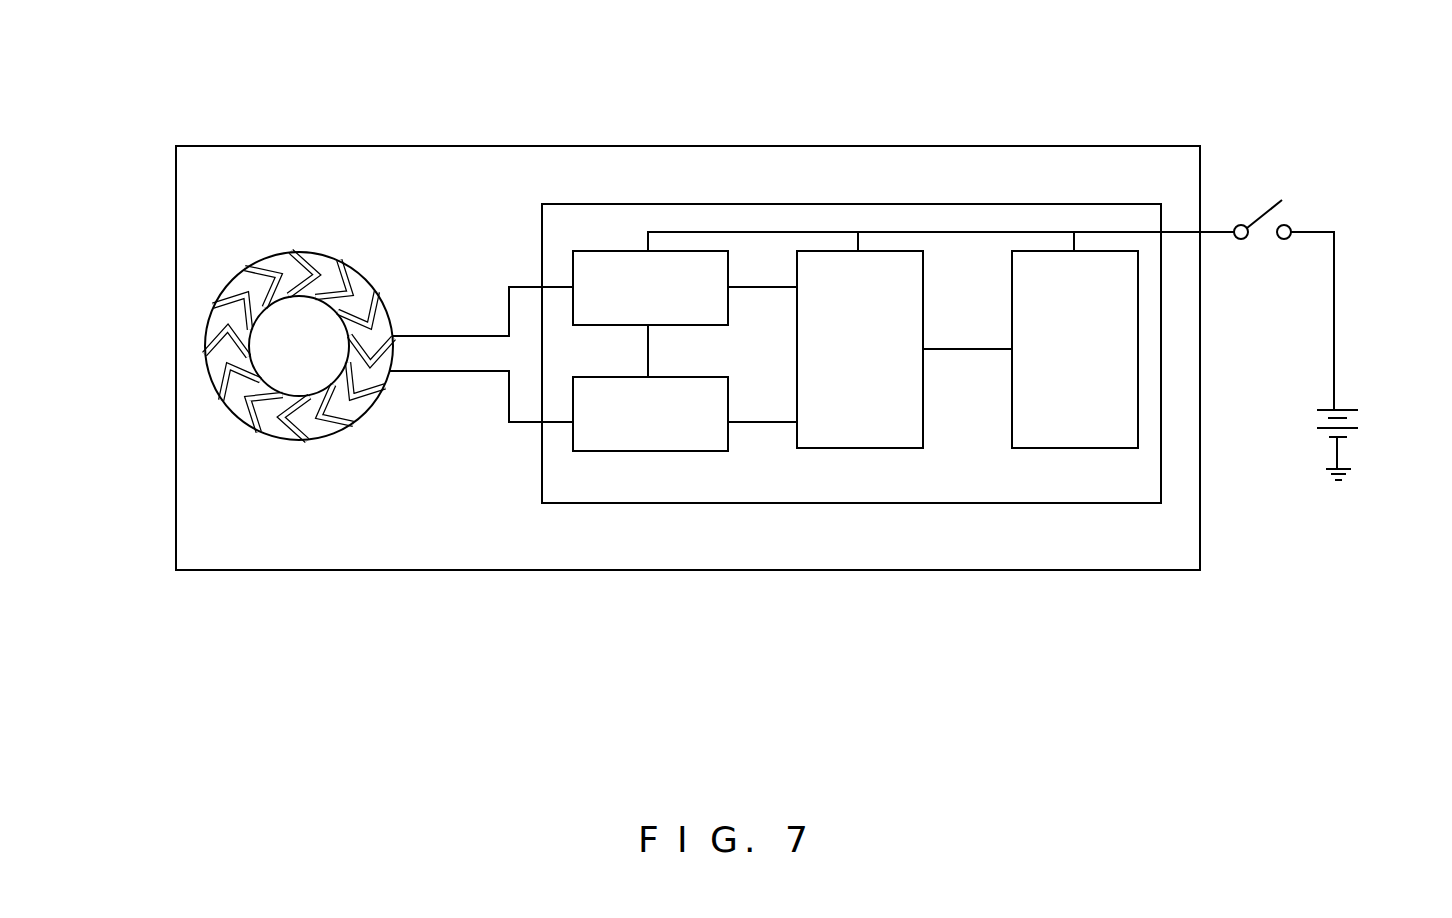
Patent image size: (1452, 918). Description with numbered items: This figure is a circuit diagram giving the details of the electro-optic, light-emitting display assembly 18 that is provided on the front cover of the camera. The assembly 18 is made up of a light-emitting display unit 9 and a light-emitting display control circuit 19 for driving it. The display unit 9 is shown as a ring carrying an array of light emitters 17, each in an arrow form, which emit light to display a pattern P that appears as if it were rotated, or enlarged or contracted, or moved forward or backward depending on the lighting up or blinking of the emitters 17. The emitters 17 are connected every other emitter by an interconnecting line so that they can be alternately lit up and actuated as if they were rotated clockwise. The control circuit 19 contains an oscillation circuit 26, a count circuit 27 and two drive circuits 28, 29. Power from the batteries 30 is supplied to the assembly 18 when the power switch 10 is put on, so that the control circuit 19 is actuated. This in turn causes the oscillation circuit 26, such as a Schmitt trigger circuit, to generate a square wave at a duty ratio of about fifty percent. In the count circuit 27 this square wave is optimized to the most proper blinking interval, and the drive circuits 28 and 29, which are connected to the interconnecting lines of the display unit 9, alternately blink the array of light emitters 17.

The light-emitting display unit 9 is at (305, 253).
The light emitters 17 is at (308, 263).
The displayed pattern P is at (360, 273).
The electro-optic, light-emitting display assembly 18 is at (1050, 146).
The light-emitting display control circuit 19 is at (948, 206).
The oscillation circuit 26 is at (1093, 285).
The count circuit 27 is at (832, 283).
The drive circuit 28 is at (604, 268).
The drive circuit 29 is at (642, 440).
The power switch 10 is at (1290, 228).
The batteries 30 is at (1342, 410).